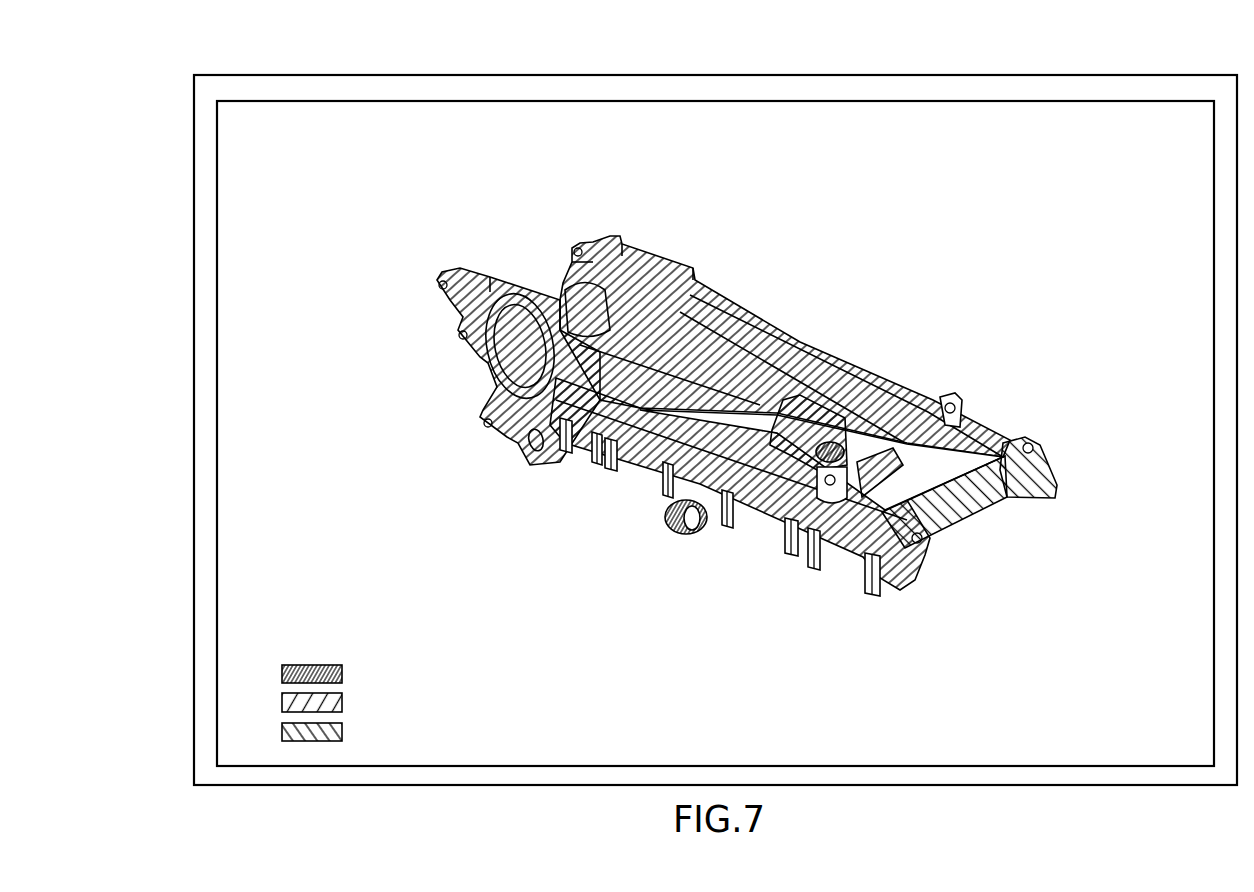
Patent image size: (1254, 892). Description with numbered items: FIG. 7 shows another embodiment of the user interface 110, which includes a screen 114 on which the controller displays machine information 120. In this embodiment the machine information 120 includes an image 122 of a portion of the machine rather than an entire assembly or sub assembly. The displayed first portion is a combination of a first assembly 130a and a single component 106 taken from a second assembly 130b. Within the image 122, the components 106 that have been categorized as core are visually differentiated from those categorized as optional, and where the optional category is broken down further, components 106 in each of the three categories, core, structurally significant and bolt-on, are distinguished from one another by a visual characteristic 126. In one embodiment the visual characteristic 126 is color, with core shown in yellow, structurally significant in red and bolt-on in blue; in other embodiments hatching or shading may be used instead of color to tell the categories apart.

The user interface 110 is at (1043, 70).
The screen 114 is at (1120, 113).
The machine information 120 is at (383, 225).
The image 122 is at (762, 308).
The first assembly 130a is at (862, 366).
The second assembly 130b is at (680, 537).
The component 106 is at (666, 517).
The visual characteristic 126 is at (282, 665).